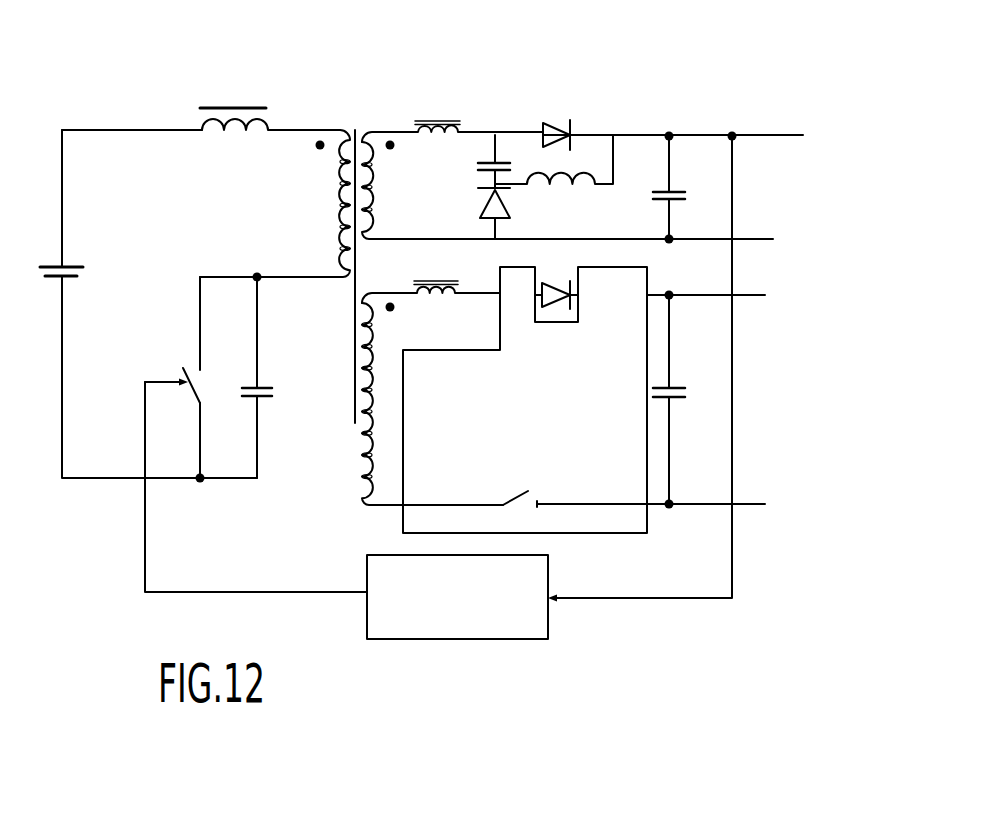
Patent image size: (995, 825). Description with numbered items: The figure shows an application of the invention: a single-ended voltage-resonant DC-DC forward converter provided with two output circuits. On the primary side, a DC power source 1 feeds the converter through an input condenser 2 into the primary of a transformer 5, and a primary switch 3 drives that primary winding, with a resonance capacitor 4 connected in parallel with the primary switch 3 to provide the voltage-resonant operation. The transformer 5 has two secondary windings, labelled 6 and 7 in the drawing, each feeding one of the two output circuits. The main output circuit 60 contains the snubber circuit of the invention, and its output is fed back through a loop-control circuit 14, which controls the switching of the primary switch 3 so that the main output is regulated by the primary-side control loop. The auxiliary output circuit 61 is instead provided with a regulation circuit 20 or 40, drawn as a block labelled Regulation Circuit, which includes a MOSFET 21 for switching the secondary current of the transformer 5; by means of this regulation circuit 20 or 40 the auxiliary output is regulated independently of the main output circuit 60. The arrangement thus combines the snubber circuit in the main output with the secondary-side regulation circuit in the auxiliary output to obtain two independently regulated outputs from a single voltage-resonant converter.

The DC power source 1 is at (68, 265).
The input condenser 2 is at (222, 108).
The primary switch 3 is at (200, 379).
The resonance capacitor 4 is at (273, 392).
The transformer 5 is at (356, 132).
The primary winding 6 is at (327, 207).
The secondary winding 7 is at (377, 190).
The main output circuit 60 is at (620, 114).
The auxiliary output circuit 61 is at (756, 283).
The regulation circuit 20 is at (562, 385).
The regulation circuit 40 is at (640, 267).
The MOSFET 21 is at (513, 506).
The loop-control circuit 14 is at (458, 642).